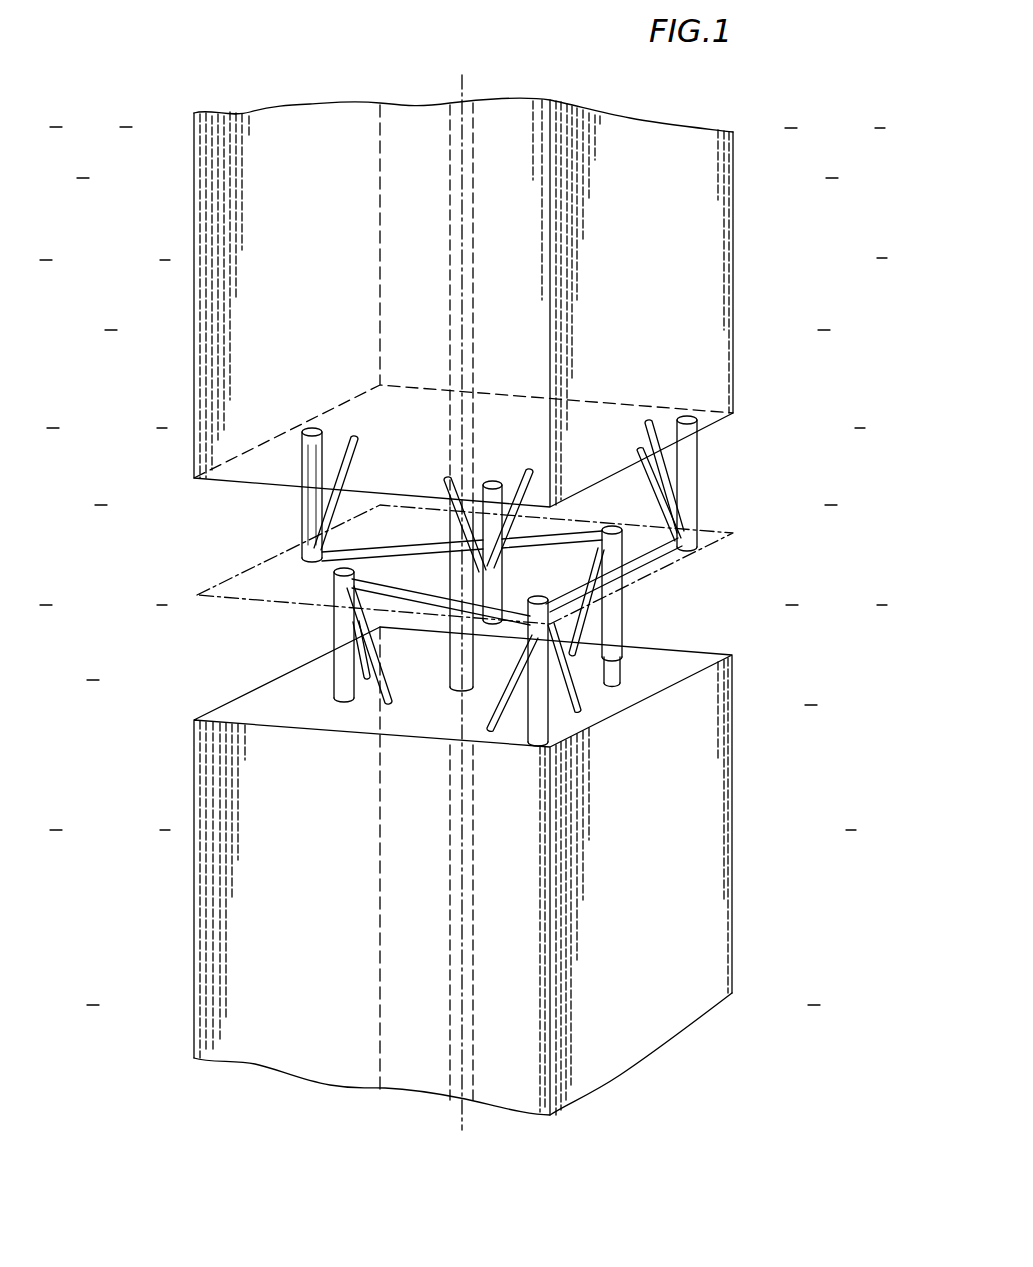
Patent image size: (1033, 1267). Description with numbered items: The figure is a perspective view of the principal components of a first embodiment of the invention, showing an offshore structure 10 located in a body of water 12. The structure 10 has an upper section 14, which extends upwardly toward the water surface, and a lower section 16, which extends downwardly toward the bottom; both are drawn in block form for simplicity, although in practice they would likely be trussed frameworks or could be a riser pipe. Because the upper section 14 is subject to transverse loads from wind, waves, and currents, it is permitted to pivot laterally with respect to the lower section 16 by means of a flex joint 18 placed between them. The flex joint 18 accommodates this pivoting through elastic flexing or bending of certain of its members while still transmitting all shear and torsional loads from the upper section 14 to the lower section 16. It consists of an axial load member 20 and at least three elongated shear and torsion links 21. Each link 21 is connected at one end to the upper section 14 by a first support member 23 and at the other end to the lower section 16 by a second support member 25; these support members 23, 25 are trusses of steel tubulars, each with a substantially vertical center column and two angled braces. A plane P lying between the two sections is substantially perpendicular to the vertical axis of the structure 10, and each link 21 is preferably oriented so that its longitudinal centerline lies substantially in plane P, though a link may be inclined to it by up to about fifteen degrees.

The offshore structure 10 is at (148, 404).
The body of water 12 is at (106, 574).
The upper section 14 is at (194, 258).
The lower section 16 is at (194, 914).
The flex joint 18 is at (755, 415).
The axial load member 20 is at (454, 683).
The shear and torsion links 21 is at (330, 575).
The first support member 23 is at (303, 518).
The second support member 25 is at (340, 668).
The plane P is at (197, 597).